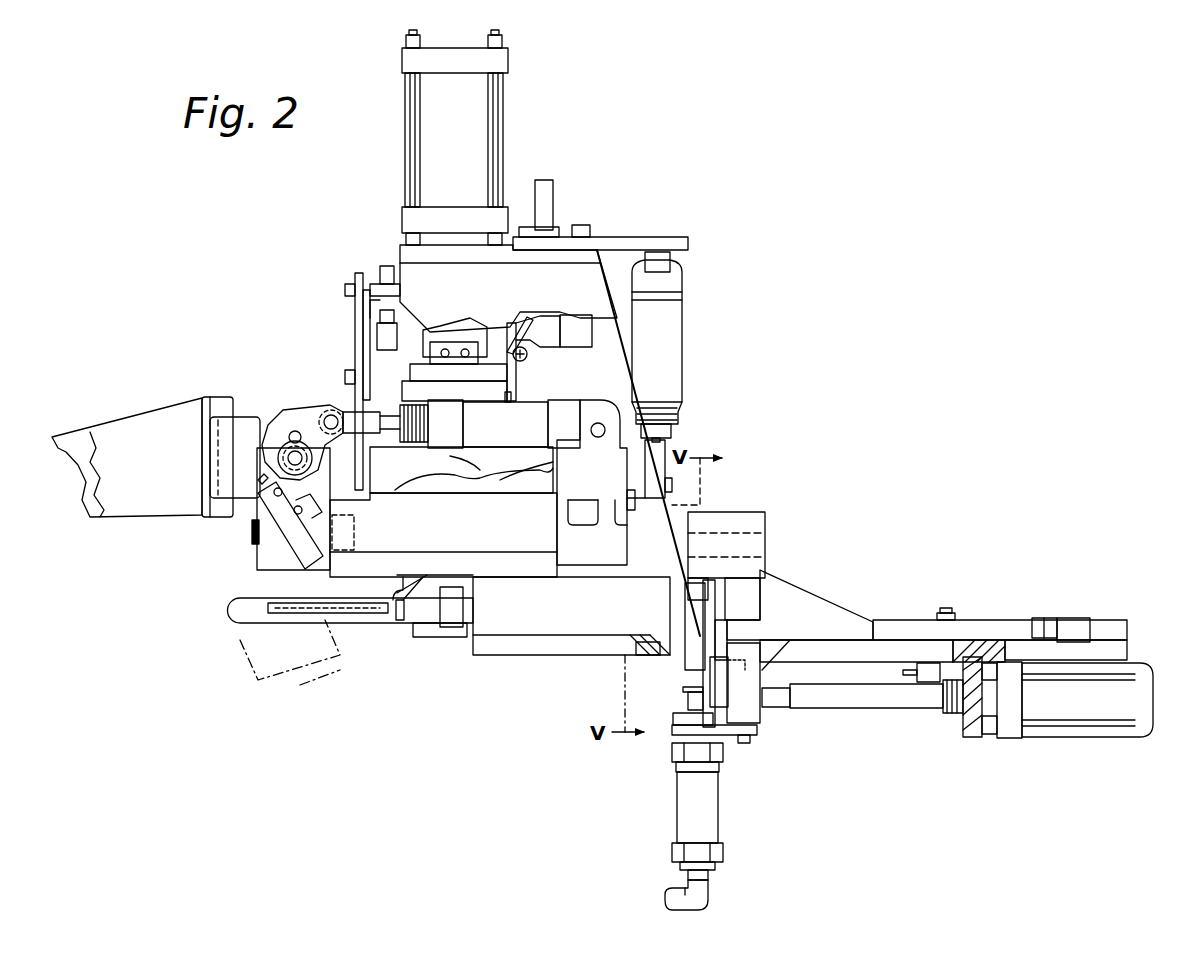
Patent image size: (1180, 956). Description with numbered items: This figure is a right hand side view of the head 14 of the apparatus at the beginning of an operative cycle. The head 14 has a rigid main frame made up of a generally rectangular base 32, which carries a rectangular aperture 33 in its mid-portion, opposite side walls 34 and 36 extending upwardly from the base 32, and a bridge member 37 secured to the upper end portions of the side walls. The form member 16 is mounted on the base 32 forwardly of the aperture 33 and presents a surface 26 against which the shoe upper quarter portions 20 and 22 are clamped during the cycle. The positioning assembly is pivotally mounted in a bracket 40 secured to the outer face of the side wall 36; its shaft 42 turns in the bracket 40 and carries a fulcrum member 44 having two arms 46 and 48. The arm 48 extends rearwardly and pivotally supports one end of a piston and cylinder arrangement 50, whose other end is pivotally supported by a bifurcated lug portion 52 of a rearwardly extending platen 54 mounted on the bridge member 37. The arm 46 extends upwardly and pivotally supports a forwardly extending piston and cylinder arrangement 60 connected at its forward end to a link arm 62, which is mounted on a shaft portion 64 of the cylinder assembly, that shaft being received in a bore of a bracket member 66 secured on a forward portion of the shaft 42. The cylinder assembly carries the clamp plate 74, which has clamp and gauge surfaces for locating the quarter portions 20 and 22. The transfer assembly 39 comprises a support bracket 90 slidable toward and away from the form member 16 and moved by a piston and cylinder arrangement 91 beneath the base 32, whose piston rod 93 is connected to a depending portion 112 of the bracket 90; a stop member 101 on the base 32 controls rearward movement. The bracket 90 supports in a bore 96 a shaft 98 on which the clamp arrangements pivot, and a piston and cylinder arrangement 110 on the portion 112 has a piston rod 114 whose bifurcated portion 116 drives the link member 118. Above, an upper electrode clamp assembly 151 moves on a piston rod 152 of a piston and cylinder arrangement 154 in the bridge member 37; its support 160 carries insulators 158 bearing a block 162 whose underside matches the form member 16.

The head 14 is at (328, 290).
The form member 16 is at (468, 591).
The quarter portion 20 is at (68, 437).
The quarter portion 22 is at (116, 430).
The surface 26 is at (406, 623).
The base 32 is at (647, 640).
The aperture 33 is at (660, 672).
The side wall 34 is at (614, 358).
The side wall 36 is at (586, 297).
The bridge member 37 is at (412, 252).
The transfer assembly 39 is at (282, 392).
The bracket 40 is at (522, 552).
The shaft 42 is at (628, 540).
The fulcrum member 44 is at (596, 560).
The arm 46 is at (606, 461).
The arm 48 is at (633, 490).
The piston and cylinder arrangement 50 is at (686, 356).
The bifurcated lug portion 52 is at (676, 264).
The platen 54 is at (613, 238).
The piston and cylinder arrangement 60 is at (517, 432).
The link arm 62 is at (314, 413).
The shaft portion 64 is at (290, 458).
The bracket member 66 is at (266, 548).
The clamp plate 74 is at (243, 418).
The support bracket 90 is at (835, 606).
The piston and cylinder arrangement 91 is at (1025, 748).
The piston rod 93 is at (907, 710).
The bore 96 is at (762, 522).
The shaft 98 is at (750, 538).
The stop member 101 is at (1037, 616).
The piston and cylinder arrangement 110 is at (722, 790).
The depending portion 112 is at (752, 720).
The piston rod 114 is at (682, 728).
The bifurcated portion 116 is at (690, 682).
The link member 118 is at (700, 645).
The upper electrode clamp assembly 151 is at (520, 368).
The piston rod 152 is at (453, 340).
The piston and cylinder arrangement 154 is at (476, 109).
The insulator 158 is at (424, 392).
The support 160 is at (470, 380).
The block 162 is at (403, 482).